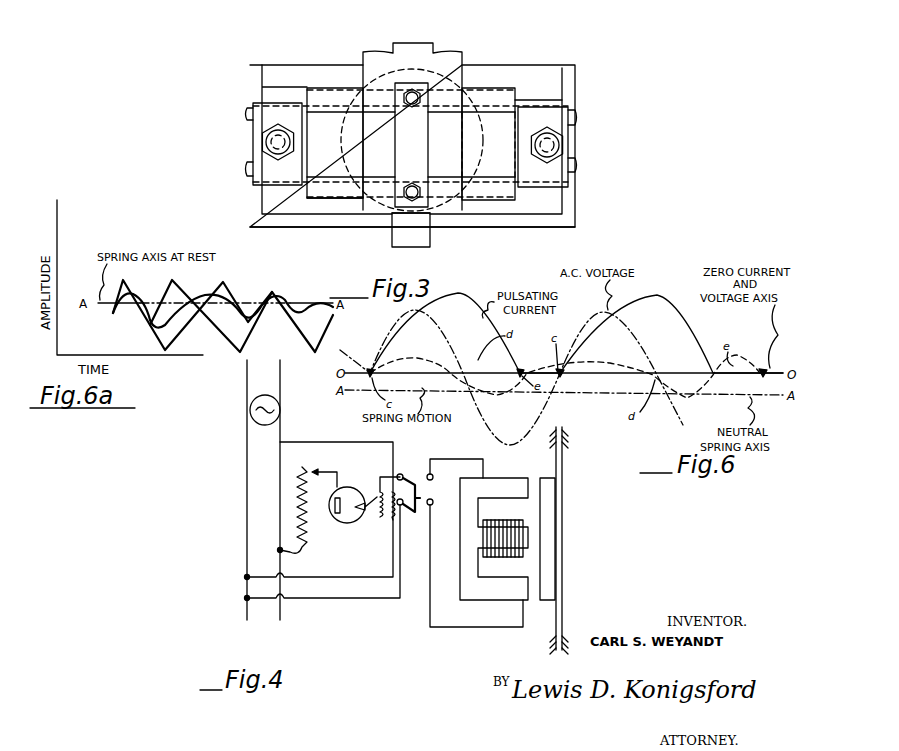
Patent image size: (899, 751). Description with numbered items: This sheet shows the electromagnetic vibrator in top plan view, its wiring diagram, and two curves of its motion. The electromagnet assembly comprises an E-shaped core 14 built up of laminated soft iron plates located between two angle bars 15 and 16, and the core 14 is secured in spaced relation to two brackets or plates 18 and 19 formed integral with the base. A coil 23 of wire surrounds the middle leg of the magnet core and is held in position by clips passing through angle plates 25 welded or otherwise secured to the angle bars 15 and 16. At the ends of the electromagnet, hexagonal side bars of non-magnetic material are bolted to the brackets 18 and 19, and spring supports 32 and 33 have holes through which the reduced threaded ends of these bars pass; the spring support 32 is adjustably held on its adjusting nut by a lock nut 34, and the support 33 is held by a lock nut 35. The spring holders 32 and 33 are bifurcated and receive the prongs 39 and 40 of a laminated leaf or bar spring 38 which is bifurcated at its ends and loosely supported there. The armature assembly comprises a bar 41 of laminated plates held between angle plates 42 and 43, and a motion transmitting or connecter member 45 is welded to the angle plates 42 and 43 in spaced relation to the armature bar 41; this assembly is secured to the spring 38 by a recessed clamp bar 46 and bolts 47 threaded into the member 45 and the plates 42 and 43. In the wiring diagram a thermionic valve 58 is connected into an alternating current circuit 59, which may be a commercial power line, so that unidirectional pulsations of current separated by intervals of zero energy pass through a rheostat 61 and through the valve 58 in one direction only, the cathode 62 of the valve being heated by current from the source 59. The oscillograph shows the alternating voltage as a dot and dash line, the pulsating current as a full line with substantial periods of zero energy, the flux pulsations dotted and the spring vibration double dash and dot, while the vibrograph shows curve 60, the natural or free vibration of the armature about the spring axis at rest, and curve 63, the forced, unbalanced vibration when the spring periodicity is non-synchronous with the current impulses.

In FIG. 4, the core 14 is at (492, 592).
In FIG. 3, the angle bar 15 is at (544, 214).
In FIG. 3, the angle bar 16 is at (548, 74).
In FIG. 3, the bracket 18 is at (570, 214).
In FIG. 3, the bracket 19 is at (262, 73).
In FIG. 3, the coil 23 is at (362, 92).
In FIG. 4, the coil 23 is at (502, 520).
In FIG. 3, the angle plate 25 is at (417, 44).
In FIG. 3, the spring support 32 is at (270, 114).
In FIG. 3, the spring support 33 is at (560, 165).
In FIG. 3, the lock nut 34 is at (263, 148).
In FIG. 3, the lock nut 35 is at (562, 140).
In FIG. 3, the spring 38 is at (496, 125).
In FIG. 4, the spring 38 is at (565, 538).
In FIG. 3, the prong 39 is at (248, 112).
In FIG. 3, the prong 40 is at (248, 170).
In FIG. 3, the armature bar 41 is at (482, 110).
In FIG. 4, the armature bar 41 is at (552, 490).
In FIG. 3, the angle plate 42 is at (320, 198).
In FIG. 3, the angle plate 43 is at (320, 88).
In FIG. 3, the motion transmitting member 45 is at (382, 52).
In FIG. 3, the clamp bar 46 is at (424, 190).
In FIG. 3, the bolt 47 is at (389, 214).
In FIG. 4, the thermionic valve 58 is at (348, 487).
In FIG. 4, the alternating current circuit 59 is at (277, 451).
In FIG. 6A, the curve 60 is at (226, 290).
In FIG. 4, the rheostat 61 is at (305, 542).
In FIG. 4, the cathode 62 is at (358, 512).
In FIG. 6A, the curve 63 is at (152, 339).